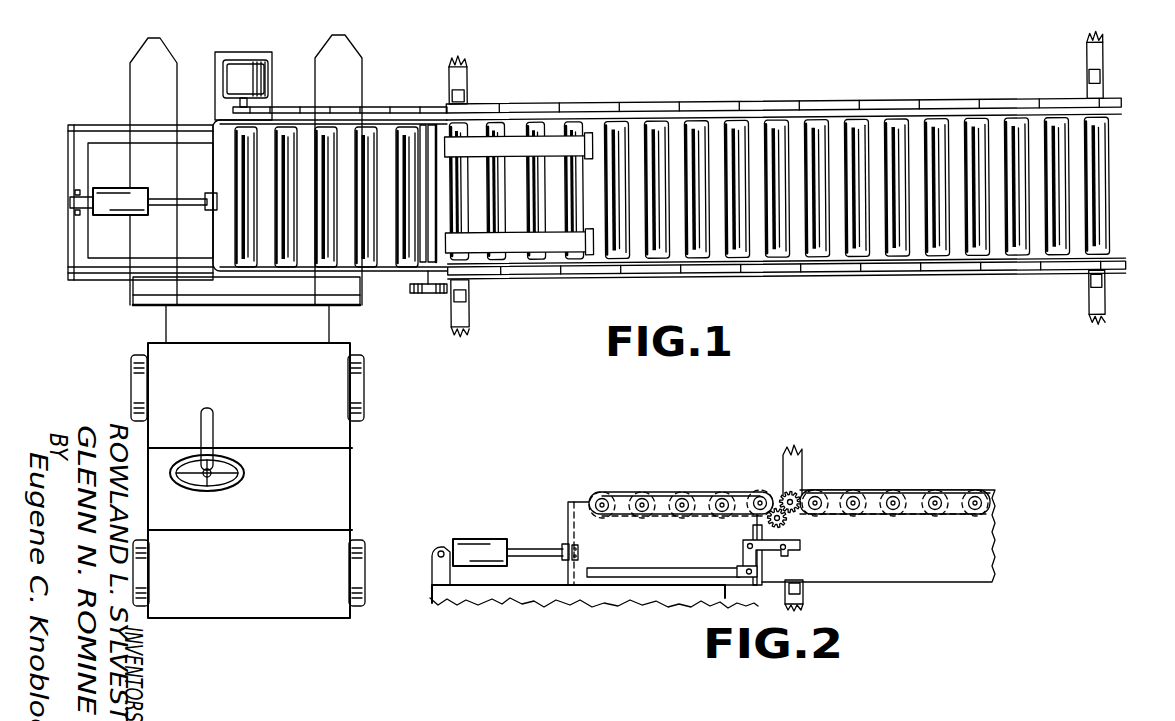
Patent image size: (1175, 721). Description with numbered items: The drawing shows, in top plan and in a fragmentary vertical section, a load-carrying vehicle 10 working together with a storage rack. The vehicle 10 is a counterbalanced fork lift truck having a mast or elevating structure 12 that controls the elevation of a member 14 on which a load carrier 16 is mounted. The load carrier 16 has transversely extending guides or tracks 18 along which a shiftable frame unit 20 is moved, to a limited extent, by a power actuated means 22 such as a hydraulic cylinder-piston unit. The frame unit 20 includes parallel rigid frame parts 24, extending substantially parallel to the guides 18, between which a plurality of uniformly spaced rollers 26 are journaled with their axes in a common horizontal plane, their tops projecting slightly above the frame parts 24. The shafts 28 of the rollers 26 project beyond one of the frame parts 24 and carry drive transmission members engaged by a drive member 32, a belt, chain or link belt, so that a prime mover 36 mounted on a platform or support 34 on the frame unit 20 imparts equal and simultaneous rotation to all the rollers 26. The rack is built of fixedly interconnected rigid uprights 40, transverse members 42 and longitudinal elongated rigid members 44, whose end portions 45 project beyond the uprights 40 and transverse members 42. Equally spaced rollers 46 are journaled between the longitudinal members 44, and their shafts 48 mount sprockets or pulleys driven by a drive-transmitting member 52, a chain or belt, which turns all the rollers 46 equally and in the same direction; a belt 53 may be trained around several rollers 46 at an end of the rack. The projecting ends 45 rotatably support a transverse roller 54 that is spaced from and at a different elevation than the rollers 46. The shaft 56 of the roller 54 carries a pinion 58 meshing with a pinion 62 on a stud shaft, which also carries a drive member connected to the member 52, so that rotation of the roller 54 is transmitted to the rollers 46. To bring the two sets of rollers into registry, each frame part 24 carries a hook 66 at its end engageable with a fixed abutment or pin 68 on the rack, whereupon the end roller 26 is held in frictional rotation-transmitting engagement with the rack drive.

In FIG. 1, the load-carrying vehicle 10 is at (356, 460).
In FIG. 1, the mast or elevating structure 12 is at (183, 325).
In FIG. 1, the member 14 is at (346, 53).
In FIG. 1, the load carrier 16 is at (66, 160).
In FIG. 2, the load carrier 16 is at (489, 614).
In FIG. 1, the guides or tracks 18 is at (96, 125).
In FIG. 2, the guides or tracks 18 is at (545, 600).
In FIG. 1, the shiftable frame unit 20 is at (205, 165).
In FIG. 1, the power actuated means 22 is at (138, 210).
In FIG. 1, the rigid frame parts 24 is at (330, 199).
In FIG. 2, the rigid frame parts 24 is at (580, 508).
In FIG. 1, the rollers 26 is at (318, 262).
In FIG. 2, the rollers 26 is at (642, 515).
In FIG. 1, the roller shafts 28 is at (283, 118).
In FIG. 2, the roller shafts 28 is at (720, 515).
In FIG. 1, the drive member 32 is at (322, 118).
In FIG. 2, the drive member 32 is at (660, 492).
In FIG. 1, the platform or support 34 is at (222, 55).
In FIG. 1, the prime mover 36 is at (252, 64).
In FIG. 1, the uprights 40 is at (470, 90).
In FIG. 2, the uprights 40 is at (795, 456).
In FIG. 1, the transverse members 42 is at (460, 66).
In FIG. 2, the transverse members 42 is at (804, 588).
In FIG. 1, the longitudinal rack members 44 is at (790, 117).
In FIG. 2, the longitudinal rack members 44 is at (893, 565).
In FIG. 2, the end portions 45 is at (780, 578).
In FIG. 1, the rollers 46 is at (768, 123).
In FIG. 2, the rollers 46 is at (893, 515).
In FIG. 2, the roller shafts 48 is at (975, 511).
In FIG. 1, the drive-transmitting member 52 is at (680, 117).
In FIG. 2, the drive-transmitting member 52 is at (840, 490).
In FIG. 1, the belt 53 is at (515, 143).
In FIG. 1, the transverse roller 54 is at (430, 127).
In FIG. 2, the shaft 56 is at (786, 524).
In FIG. 2, the pinion 58 is at (762, 531).
In FIG. 2, the pinion 62 is at (783, 495).
In FIG. 2, the hook 66 is at (799, 546).
In FIG. 2, the fixed abutment or pin 68 is at (783, 550).